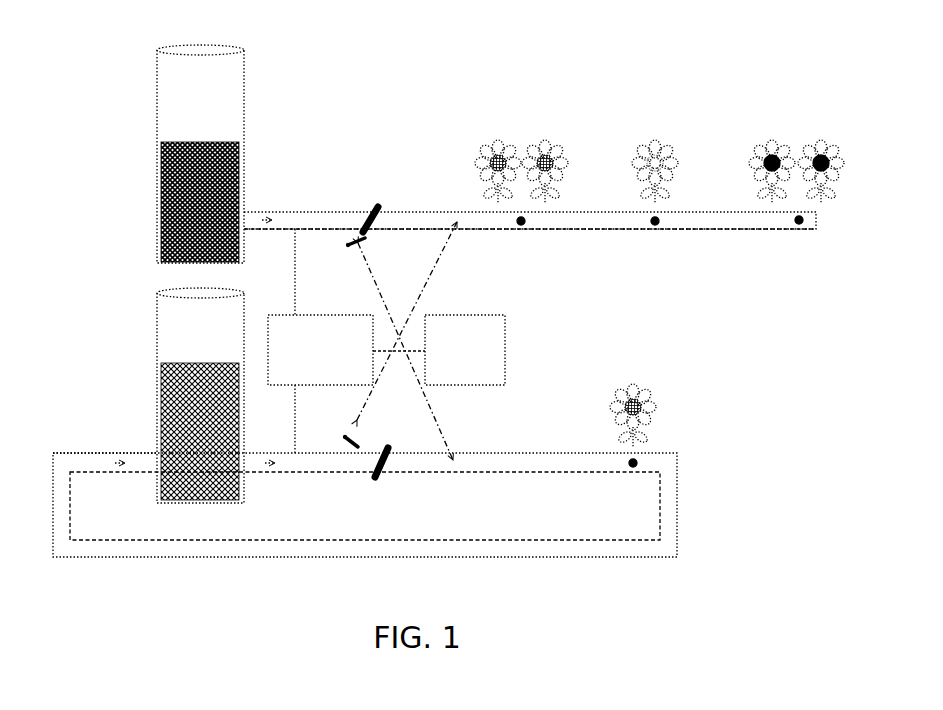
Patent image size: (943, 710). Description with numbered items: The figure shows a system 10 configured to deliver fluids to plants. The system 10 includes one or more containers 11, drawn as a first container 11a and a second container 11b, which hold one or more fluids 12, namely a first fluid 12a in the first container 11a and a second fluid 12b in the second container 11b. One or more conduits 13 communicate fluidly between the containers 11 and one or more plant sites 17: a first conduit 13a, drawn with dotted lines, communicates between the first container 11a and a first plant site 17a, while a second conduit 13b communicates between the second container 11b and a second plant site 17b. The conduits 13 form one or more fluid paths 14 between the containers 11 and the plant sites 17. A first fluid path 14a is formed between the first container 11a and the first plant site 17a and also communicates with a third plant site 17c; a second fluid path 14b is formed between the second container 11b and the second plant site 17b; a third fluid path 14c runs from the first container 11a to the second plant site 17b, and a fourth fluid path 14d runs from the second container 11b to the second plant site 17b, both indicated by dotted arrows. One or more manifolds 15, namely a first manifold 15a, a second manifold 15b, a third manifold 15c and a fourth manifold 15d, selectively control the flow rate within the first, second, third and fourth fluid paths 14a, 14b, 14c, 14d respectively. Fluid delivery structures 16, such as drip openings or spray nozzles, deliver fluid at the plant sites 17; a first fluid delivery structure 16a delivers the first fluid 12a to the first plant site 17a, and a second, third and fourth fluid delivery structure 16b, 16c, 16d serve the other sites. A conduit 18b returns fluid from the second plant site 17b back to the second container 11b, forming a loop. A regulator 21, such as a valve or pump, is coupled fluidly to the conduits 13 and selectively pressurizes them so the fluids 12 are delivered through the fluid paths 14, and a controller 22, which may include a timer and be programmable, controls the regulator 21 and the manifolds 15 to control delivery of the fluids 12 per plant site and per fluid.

The system 10 is at (170, 622).
The containers 11 is at (153, 211).
The first container 11a is at (203, 55).
The second container 11b is at (206, 297).
The fluids 12 is at (157, 400).
The first fluid 12a is at (158, 156).
The second fluid 12b is at (158, 380).
The conduits 13 is at (253, 453).
The first conduit 13a is at (258, 211).
The second conduit 13b is at (258, 475).
The fluid paths 14 is at (374, 232).
The first fluid path 14a is at (374, 210).
The second fluid path 14b is at (392, 468).
The third fluid path 14c is at (352, 250).
The fourth fluid path 14d is at (350, 434).
The manifolds 15 is at (360, 232).
The first manifold 15a is at (378, 207).
The second manifold 15b is at (376, 478).
The third manifold 15c is at (347, 244).
The fourth manifold 15d is at (344, 437).
The fluid delivery structures 16 is at (633, 463).
The first fluid delivery structure 16a is at (521, 224).
The second fluid delivery structure 16b is at (633, 466).
The third fluid delivery structure 16c is at (657, 226).
The fourth fluid delivery structure 16d is at (797, 226).
The plant sites 17 is at (613, 383).
The first plant site 17a is at (521, 163).
The second plant site 17b is at (633, 405).
The third plant site 17c is at (738, 163).
The conduit 18b is at (86, 453).
The regulator 21 is at (323, 315).
The controller 22 is at (455, 315).